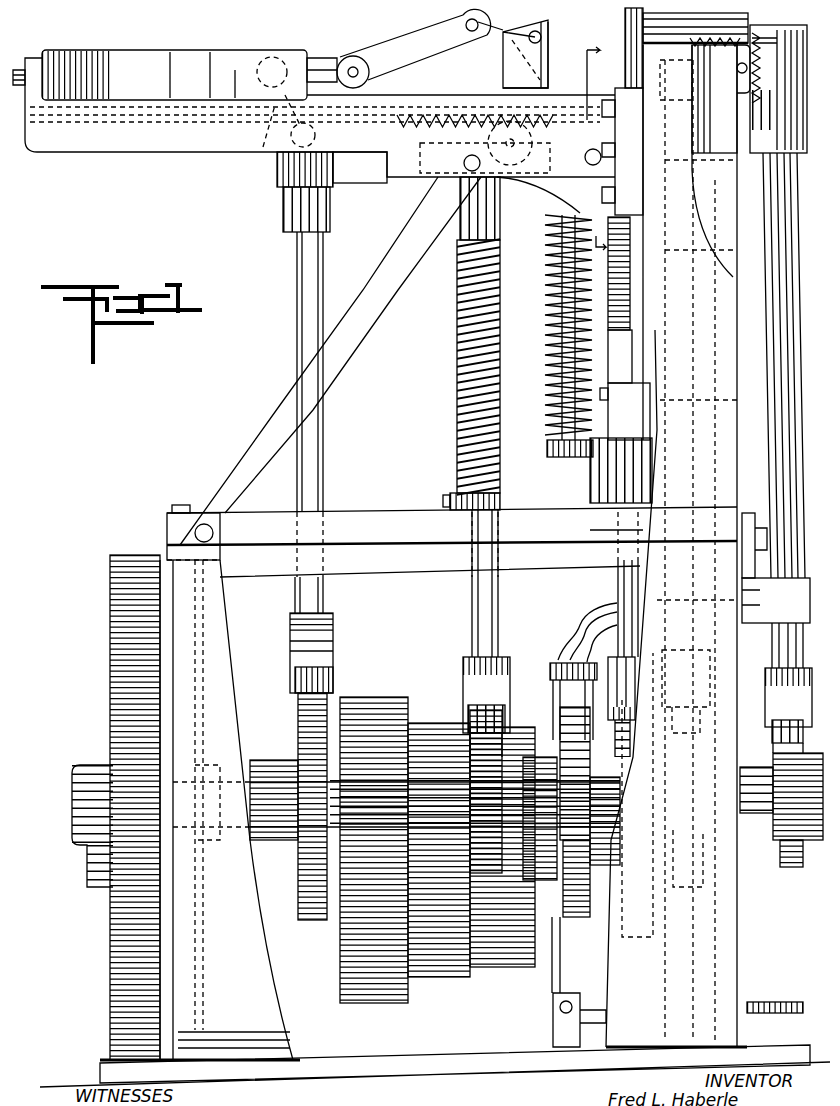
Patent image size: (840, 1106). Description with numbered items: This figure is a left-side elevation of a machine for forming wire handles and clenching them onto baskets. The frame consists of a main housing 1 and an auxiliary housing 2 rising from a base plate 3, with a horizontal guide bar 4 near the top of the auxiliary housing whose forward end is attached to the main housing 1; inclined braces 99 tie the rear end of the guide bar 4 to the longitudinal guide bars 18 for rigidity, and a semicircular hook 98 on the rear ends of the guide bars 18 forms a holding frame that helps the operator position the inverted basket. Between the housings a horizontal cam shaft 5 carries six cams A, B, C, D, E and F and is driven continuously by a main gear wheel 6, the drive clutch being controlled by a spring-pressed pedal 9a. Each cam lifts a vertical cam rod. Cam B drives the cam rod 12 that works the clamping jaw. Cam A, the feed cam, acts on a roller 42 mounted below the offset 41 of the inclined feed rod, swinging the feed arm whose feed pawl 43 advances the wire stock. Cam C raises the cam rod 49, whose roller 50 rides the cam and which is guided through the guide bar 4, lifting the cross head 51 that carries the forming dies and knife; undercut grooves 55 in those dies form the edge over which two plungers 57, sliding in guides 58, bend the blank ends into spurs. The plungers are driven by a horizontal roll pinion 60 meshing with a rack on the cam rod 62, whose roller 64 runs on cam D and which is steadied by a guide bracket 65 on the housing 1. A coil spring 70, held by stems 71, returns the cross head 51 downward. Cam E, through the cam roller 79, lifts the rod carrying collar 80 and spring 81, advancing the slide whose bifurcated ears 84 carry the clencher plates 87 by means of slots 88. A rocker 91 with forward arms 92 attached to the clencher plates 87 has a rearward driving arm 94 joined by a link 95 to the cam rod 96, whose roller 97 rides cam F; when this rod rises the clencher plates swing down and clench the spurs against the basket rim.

The main housing 1 is at (728, 442).
The auxiliary housing 2 is at (168, 557).
The base plate 3 is at (452, 1065).
The horizontal frame bar or guide bar 4 is at (392, 518).
The cam shaft 5 is at (372, 808).
The main gear wheel 6 is at (110, 622).
The spring-pressed pedal 9a is at (763, 1003).
The cam rod 12 is at (697, 388).
The horizontal guide bars 18 is at (488, 152).
The offset 41 is at (583, 612).
The roller 42 is at (567, 727).
The feed pawl 43 is at (707, 702).
The cam rod 49 is at (617, 583).
The roller 50 is at (617, 733).
The cross head 51 is at (612, 470).
The grooves 55 is at (643, 14).
The plungers 57 is at (778, 78).
The guides 58 is at (709, 23).
The horizontal roll pinion 60 is at (727, 111).
The cam rod 62 is at (790, 355).
The roller 64 is at (788, 705).
The guide bracket 65 is at (776, 568).
The coil spring 70 is at (552, 253).
The stems 71 is at (550, 298).
The cam roller 79 is at (470, 712).
The collar 80 is at (505, 496).
The spring 81 is at (462, 335).
The bifurcated ears 84 is at (541, 55).
The clencher plates 87 is at (492, 47).
The slot 88 is at (540, 34).
The rocker 91 is at (356, 58).
The arms 92 is at (415, 45).
The driving arm 94 is at (318, 65).
The link 95 is at (268, 120).
The cam rod 96 is at (315, 453).
The roller 97 is at (330, 678).
The semicircular hook 98 is at (107, 68).
The inclined braces 99 is at (358, 300).
The cam A is at (573, 917).
The cam B is at (687, 888).
The cam C is at (637, 812).
The cam D is at (792, 853).
The cam E is at (490, 870).
The cam F is at (306, 921).